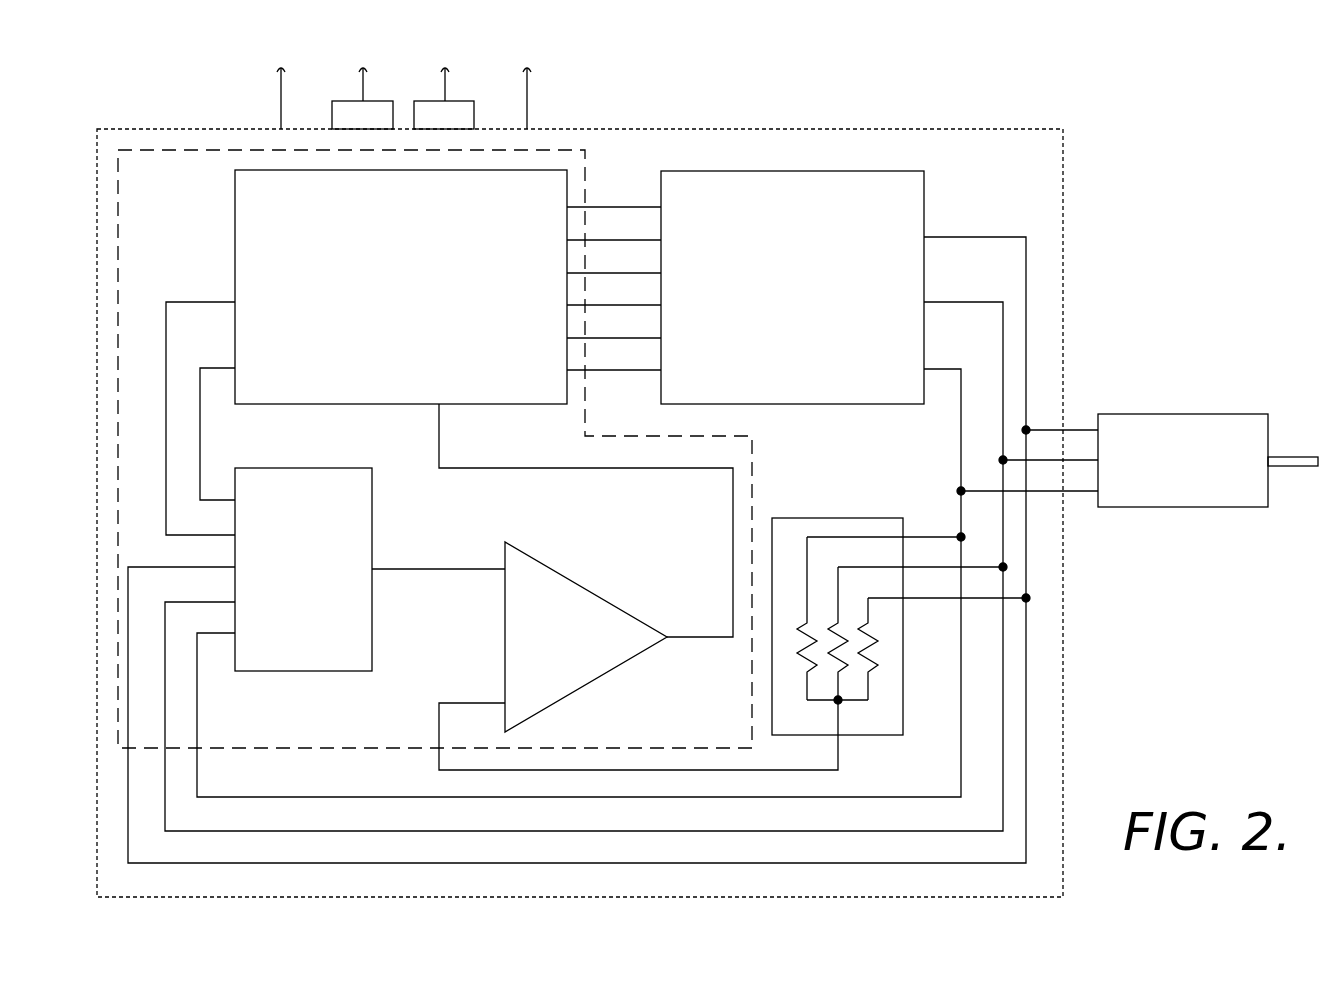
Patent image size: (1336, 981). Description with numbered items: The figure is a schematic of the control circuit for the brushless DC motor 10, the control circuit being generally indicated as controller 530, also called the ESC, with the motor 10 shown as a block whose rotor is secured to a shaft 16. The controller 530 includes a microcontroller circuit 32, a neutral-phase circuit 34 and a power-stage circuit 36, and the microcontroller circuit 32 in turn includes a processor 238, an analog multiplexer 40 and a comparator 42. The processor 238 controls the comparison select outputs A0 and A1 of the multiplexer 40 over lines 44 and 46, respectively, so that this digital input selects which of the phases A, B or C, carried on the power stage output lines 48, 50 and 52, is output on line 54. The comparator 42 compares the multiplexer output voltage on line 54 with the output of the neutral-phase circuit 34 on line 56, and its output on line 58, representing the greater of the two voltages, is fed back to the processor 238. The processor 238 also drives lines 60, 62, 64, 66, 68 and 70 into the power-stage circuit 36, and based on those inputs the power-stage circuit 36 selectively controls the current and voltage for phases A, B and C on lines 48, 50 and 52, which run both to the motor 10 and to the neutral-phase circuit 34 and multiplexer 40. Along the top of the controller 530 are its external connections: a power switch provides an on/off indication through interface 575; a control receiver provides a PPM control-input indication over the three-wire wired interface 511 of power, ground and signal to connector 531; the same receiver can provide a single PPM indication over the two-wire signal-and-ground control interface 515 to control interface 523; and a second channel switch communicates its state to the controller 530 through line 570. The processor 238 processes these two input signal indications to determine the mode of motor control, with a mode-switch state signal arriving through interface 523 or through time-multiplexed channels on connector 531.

The brushless DC motor 10 is at (1195, 414).
The shaft 16 is at (1296, 468).
The microcontroller circuit 32 is at (570, 150).
The neutral-phase circuit 34 is at (850, 518).
The power-stage circuit 36 is at (780, 171).
The analog multiplexer 40 is at (302, 671).
The comparator 42 is at (585, 583).
The comparison select line 44 is at (218, 368).
The comparison select line 46 is at (200, 302).
The power stage output line 48 is at (930, 237).
The power stage output line 50 is at (930, 302).
The power stage output line 52 is at (930, 369).
The multiplexer output line 54 is at (403, 569).
The neutral-phase output line 56 is at (733, 770).
The comparator output line 58 is at (535, 468).
The power stage input line 60 is at (594, 207).
The power stage input line 62 is at (594, 240).
The power stage input line 64 is at (594, 273).
The power stage input line 66 is at (594, 305).
The power stage input line 68 is at (594, 338).
The power stage input line 70 is at (594, 370).
The processor 238 is at (235, 192).
The wired interface 511 is at (442, 75).
The two-wire control interface 515 is at (360, 75).
The control interface 523 is at (362, 115).
The connector 531 is at (444, 115).
The control circuit 530 is at (1066, 160).
The line 570 is at (278, 75).
The interface 575 is at (524, 75).